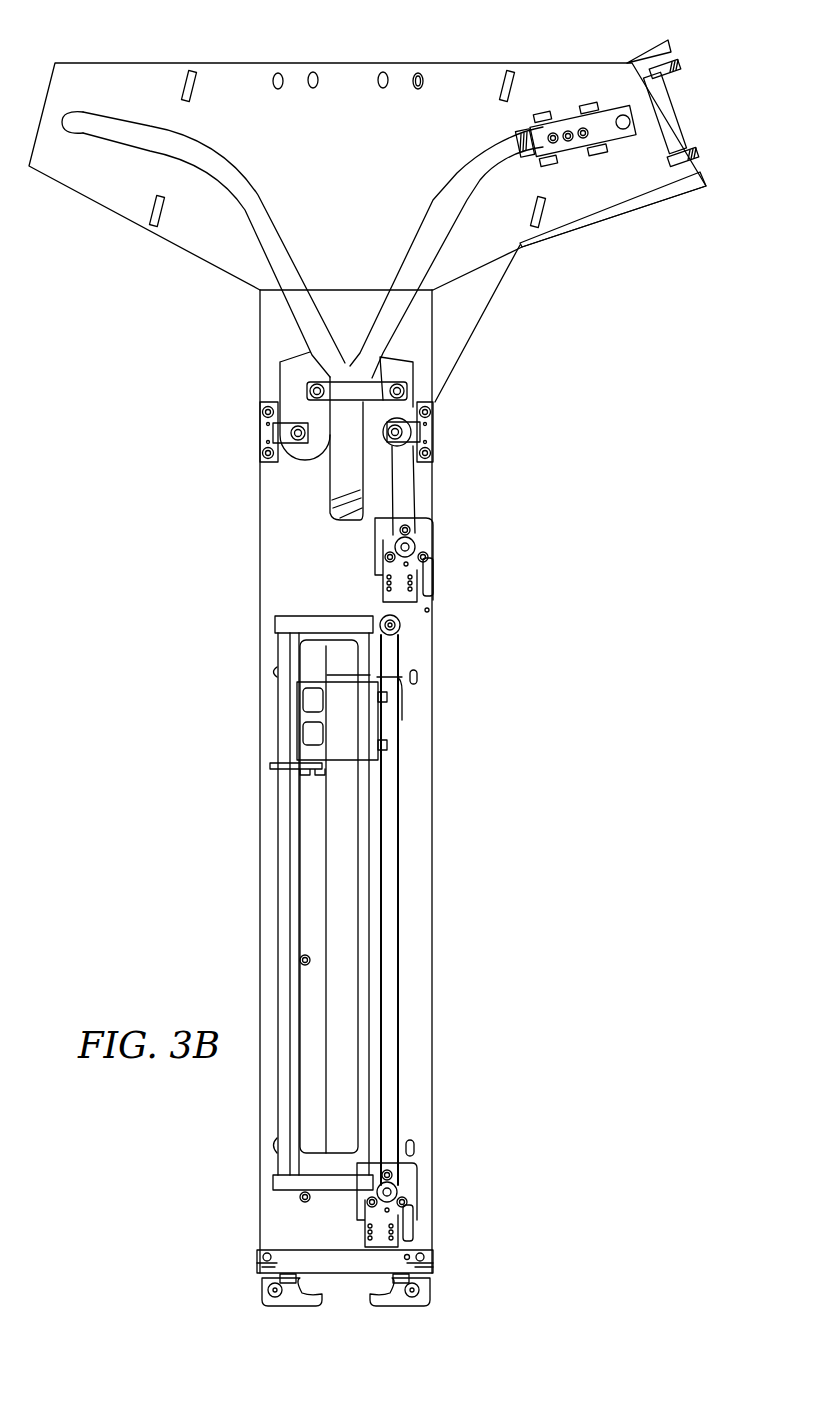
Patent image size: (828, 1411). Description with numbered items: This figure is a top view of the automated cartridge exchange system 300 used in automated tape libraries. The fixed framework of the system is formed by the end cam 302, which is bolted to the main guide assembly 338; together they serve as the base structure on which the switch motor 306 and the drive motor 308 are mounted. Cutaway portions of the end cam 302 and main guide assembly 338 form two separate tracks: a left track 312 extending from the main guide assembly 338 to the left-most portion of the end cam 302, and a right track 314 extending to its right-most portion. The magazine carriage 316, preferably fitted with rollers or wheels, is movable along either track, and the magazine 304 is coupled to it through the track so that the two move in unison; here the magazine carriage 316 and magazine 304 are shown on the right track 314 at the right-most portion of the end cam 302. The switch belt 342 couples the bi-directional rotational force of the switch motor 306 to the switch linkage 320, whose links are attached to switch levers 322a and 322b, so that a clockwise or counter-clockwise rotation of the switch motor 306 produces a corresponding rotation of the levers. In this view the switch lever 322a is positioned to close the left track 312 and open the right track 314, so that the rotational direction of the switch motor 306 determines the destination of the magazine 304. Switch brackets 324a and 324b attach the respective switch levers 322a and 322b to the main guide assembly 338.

The automated cartridge exchange system 300 is at (118, 455).
The end cam 302 is at (145, 63).
The magazine 304 is at (680, 110).
The switch motor 306 is at (440, 543).
The drive motor 308 is at (423, 1190).
The left track 312 is at (217, 163).
The right track 314 is at (477, 163).
The magazine carriage 316 is at (613, 97).
The switch linkage 320 is at (358, 382).
The switch lever 322a is at (312, 408).
The switch lever 322b is at (405, 374).
The switch bracket 324a is at (270, 433).
The switch bracket 324b is at (428, 432).
The main guide assembly 338 is at (432, 876).
The switch belt 342 is at (413, 492).